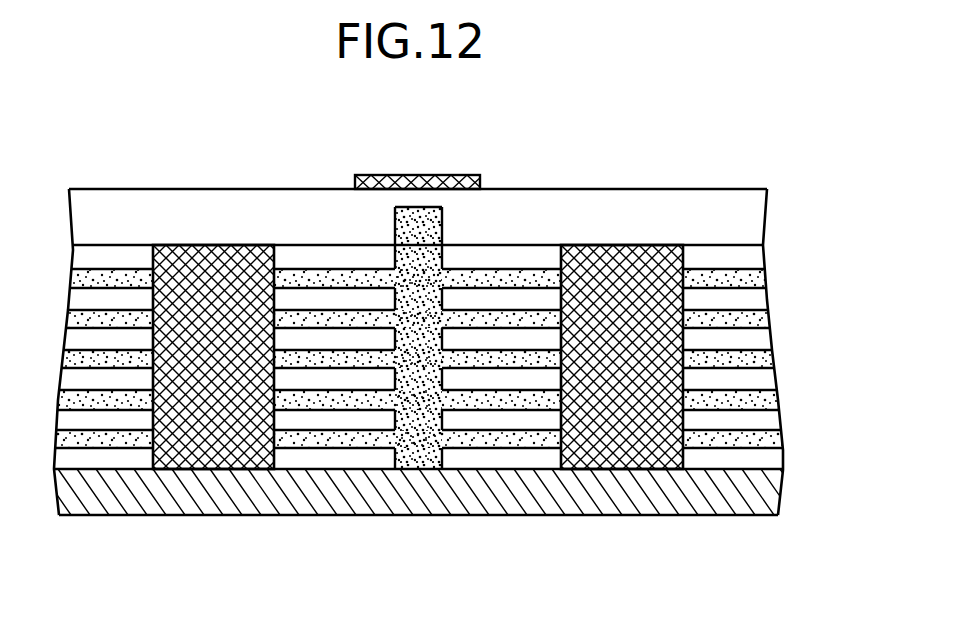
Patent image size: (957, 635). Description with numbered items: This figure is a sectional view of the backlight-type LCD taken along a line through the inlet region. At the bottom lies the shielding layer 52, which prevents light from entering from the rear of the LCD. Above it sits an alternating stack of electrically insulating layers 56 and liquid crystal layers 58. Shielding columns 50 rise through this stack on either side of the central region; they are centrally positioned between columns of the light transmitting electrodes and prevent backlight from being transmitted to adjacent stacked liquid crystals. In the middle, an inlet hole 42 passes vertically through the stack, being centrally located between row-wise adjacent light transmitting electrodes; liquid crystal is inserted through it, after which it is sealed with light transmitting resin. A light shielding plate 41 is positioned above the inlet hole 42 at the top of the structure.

The light shielding plate 41 is at (402, 184).
The inlet hole 42 is at (437, 207).
The shielding column 50 is at (670, 268).
The shielding layer 52 is at (707, 487).
The electrically insulating layer 56 is at (503, 302).
The liquid crystal layer 58 is at (568, 284).